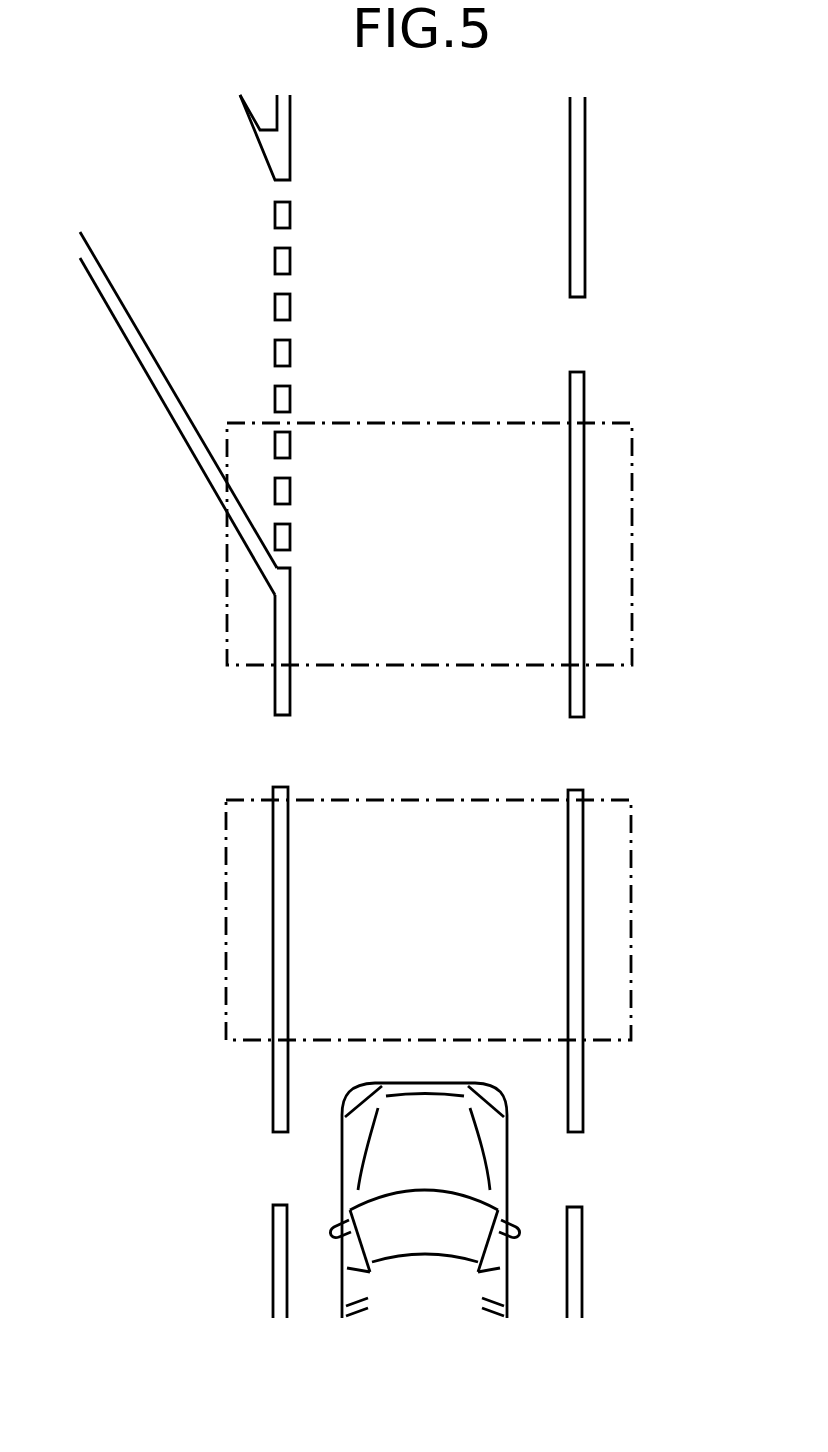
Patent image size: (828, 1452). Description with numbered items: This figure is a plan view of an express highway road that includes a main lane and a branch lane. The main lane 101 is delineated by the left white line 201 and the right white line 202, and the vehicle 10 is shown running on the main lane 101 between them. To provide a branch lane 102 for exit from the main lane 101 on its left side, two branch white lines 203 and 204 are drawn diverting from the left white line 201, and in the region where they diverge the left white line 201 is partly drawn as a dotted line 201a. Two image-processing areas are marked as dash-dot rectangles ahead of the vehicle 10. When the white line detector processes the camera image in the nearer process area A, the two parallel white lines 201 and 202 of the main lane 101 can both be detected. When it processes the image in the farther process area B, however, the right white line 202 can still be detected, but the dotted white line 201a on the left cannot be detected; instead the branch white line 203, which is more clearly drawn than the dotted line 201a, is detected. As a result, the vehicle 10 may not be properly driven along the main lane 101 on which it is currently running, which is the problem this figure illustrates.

The vehicle 10 is at (372, 1165).
The main lane 101 is at (427, 741).
The branch lane 102 is at (174, 243).
The left white line 201 is at (277, 970).
The dotted line 201a is at (290, 350).
The right white line 202 is at (583, 1073).
The branch white line 203 is at (129, 343).
The branch white line 204 is at (239, 108).
The process area A is at (631, 918).
The process area B is at (632, 572).